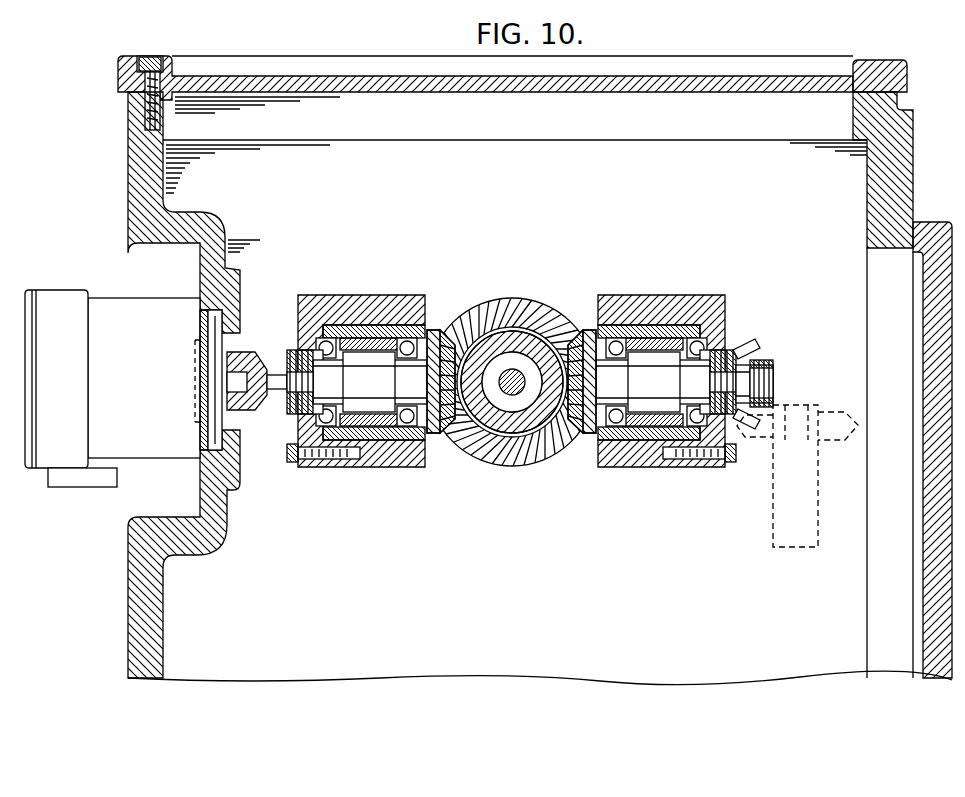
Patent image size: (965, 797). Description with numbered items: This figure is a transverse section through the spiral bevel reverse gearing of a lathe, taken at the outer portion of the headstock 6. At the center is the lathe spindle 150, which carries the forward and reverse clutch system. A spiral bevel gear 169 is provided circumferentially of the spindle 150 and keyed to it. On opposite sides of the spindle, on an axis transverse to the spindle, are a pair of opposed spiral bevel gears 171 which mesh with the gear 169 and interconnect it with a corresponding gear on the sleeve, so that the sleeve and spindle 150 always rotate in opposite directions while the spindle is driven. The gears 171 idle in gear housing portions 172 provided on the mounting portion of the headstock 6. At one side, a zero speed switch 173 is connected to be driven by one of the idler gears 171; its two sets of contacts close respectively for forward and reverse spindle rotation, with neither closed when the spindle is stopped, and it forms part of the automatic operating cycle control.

The headstock 6 is at (127, 171).
The lathe spindle 150 is at (512, 330).
The spiral bevel gear 169 is at (548, 316).
The opposed spiral bevel gears 171 is at (437, 438).
The gear housing portions 172 is at (374, 468).
The zero speed switch 173 is at (116, 292).